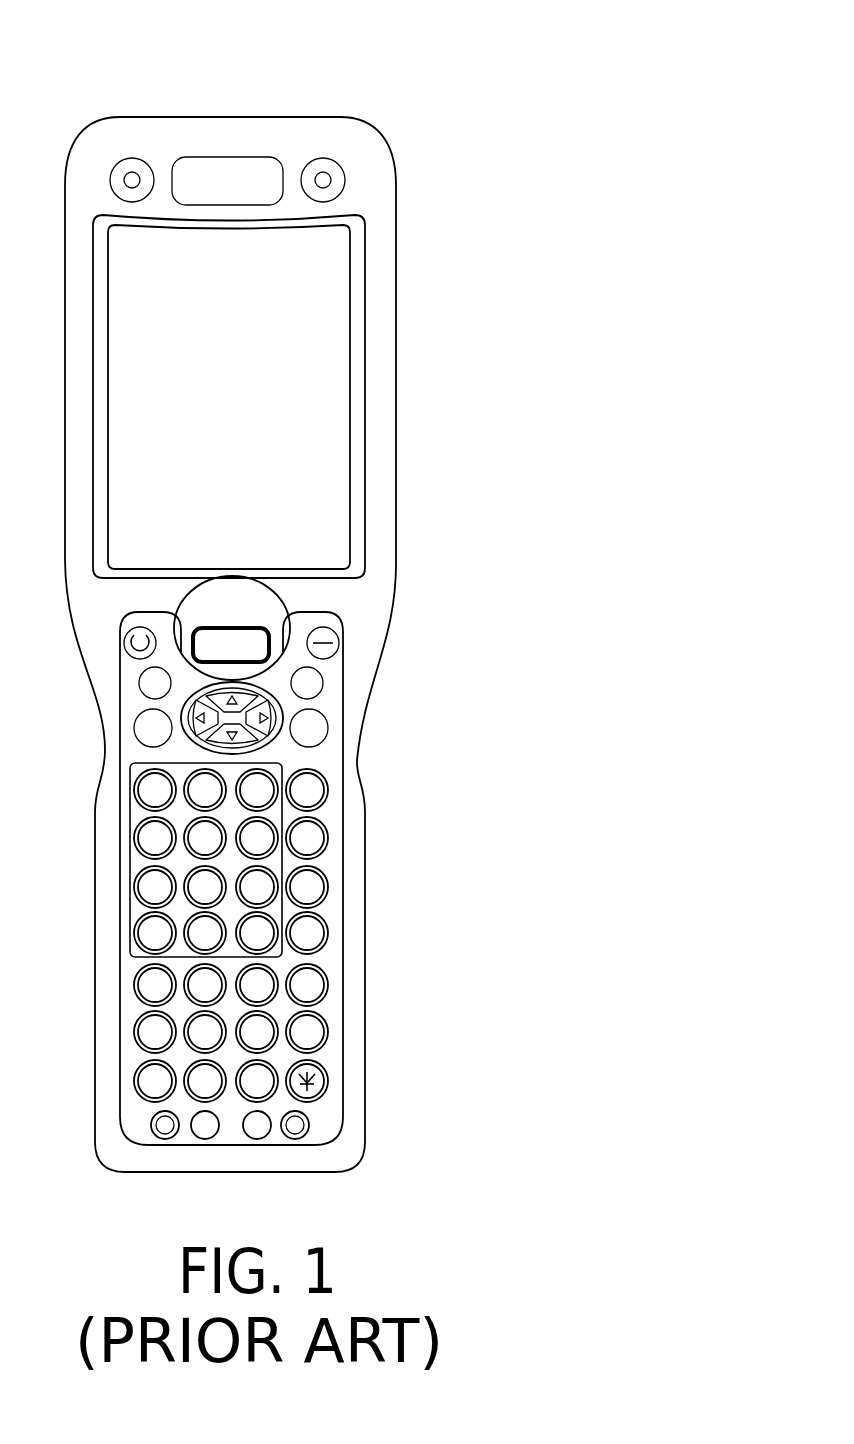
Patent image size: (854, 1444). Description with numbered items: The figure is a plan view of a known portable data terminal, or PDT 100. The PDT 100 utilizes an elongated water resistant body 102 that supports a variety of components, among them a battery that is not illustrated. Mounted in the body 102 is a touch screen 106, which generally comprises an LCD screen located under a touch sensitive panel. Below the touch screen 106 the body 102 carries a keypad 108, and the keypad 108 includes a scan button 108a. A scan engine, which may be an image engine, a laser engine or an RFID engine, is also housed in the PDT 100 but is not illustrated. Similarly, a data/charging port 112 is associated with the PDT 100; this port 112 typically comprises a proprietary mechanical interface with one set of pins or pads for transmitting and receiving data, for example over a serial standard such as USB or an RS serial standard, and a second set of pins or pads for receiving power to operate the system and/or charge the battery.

The PDT 100 is at (386, 72).
The elongated water resistant body 102 is at (408, 334).
The touch screen 106 is at (258, 388).
The keypad 108 is at (328, 762).
The scan button 108a is at (282, 617).
The data/charging port 112 is at (247, 1172).